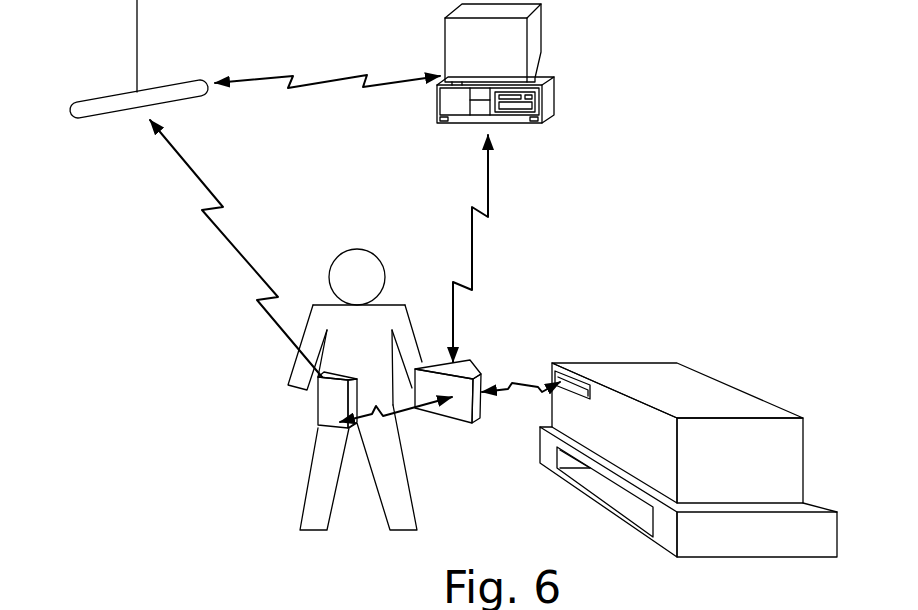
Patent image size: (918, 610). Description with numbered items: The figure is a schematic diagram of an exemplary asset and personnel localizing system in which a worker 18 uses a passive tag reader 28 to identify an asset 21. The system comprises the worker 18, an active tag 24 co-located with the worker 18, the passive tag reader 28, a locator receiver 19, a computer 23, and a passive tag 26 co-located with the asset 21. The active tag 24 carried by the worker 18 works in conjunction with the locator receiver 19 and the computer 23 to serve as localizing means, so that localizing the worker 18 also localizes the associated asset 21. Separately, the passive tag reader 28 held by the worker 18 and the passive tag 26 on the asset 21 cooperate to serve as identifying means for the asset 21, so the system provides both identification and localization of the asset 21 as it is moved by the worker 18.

The worker 18 is at (355, 247).
The locator receiver 19 is at (120, 97).
The asset 21 is at (628, 363).
The computer 23 is at (550, 100).
The active tag 24 is at (318, 424).
The passive tag 26 is at (578, 377).
The passive tag reader 28 is at (466, 422).